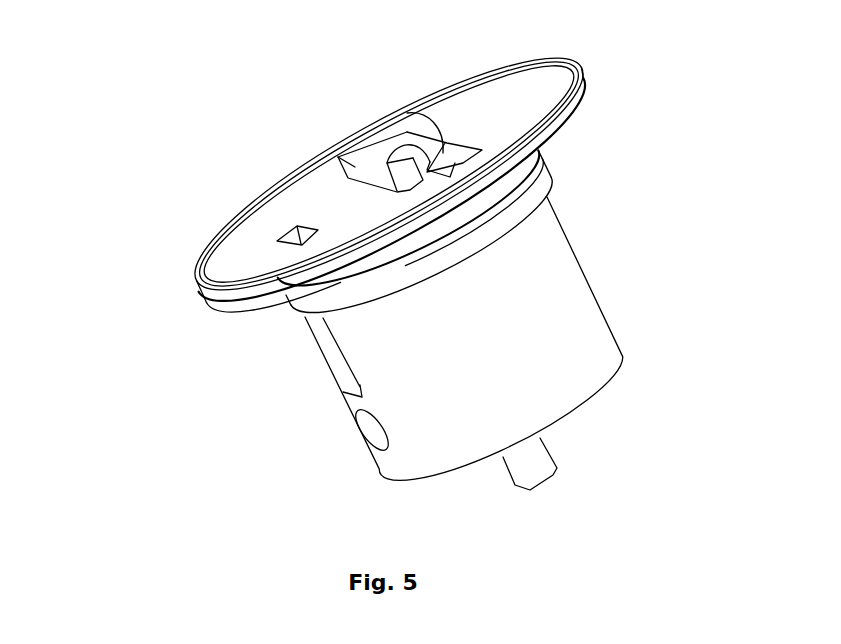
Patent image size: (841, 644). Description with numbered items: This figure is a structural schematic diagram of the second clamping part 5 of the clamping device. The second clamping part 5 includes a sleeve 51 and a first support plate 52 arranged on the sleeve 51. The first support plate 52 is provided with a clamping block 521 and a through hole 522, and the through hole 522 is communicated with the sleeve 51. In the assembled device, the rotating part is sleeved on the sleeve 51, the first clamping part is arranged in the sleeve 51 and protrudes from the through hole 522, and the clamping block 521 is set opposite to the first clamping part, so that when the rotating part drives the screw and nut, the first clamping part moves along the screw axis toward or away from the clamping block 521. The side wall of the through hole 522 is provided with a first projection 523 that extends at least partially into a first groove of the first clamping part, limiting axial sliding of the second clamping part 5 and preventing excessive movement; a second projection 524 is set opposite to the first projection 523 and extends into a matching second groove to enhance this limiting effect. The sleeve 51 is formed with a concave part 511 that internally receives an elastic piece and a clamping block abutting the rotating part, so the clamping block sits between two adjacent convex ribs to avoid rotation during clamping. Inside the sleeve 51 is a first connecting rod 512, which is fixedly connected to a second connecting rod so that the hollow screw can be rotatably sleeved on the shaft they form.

The second clamping part 5 is at (95, 67).
The sleeve 51 is at (555, 272).
The concave part 511 is at (375, 433).
The first connecting rod 512 is at (530, 472).
The first support plate 52 is at (237, 276).
The clamping block 521 is at (338, 157).
The through hole 522 is at (480, 183).
The first projection 523 is at (407, 132).
The second projection 524 is at (407, 113).